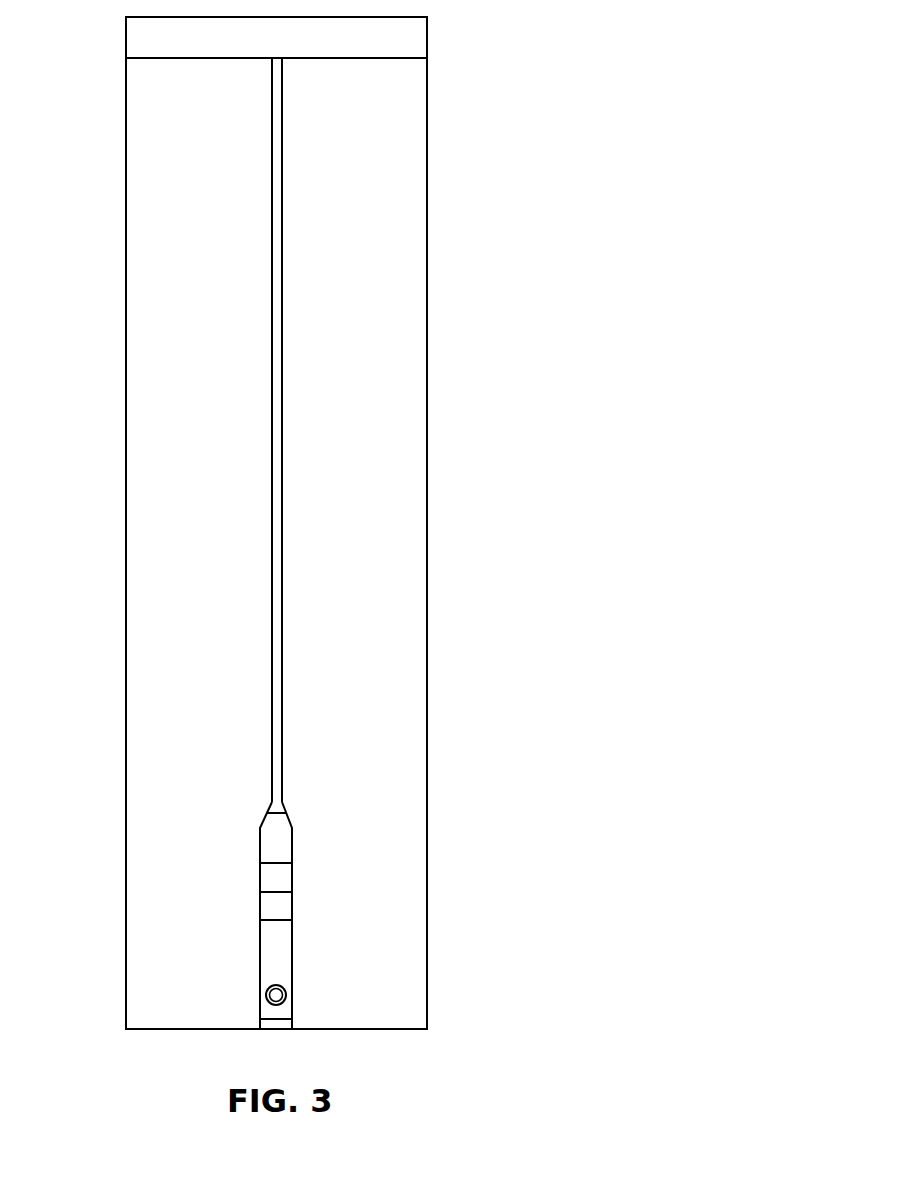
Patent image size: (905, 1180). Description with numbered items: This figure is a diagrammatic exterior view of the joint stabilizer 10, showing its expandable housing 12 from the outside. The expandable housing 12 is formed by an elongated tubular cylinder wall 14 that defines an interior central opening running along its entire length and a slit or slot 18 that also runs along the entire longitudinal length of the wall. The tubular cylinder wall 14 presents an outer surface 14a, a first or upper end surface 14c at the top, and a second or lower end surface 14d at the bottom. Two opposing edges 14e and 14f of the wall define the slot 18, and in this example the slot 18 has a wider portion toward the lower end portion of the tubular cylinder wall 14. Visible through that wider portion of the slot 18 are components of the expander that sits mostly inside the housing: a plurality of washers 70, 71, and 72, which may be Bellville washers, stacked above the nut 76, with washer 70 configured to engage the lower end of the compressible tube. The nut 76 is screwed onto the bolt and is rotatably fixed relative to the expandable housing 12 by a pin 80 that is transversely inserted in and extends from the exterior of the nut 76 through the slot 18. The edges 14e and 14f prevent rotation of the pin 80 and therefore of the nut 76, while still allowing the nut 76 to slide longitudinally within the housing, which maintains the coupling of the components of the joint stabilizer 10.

The joint stabilizer 10 is at (524, 120).
The expandable housing 12 is at (434, 400).
The tubular cylinder wall 14 is at (427, 222).
The outer surface 14a is at (402, 258).
The first or upper end surface 14c is at (407, 55).
The second or lower end surface 14d is at (345, 1030).
The edge 14e is at (272, 573).
The edge 14f is at (271, 541).
The slit or slot 18 is at (277, 453).
The washer 70 is at (280, 841).
The washer 71 is at (280, 878).
The washer 72 is at (280, 908).
The nut 76 is at (280, 941).
The pin 80 is at (271, 1012).